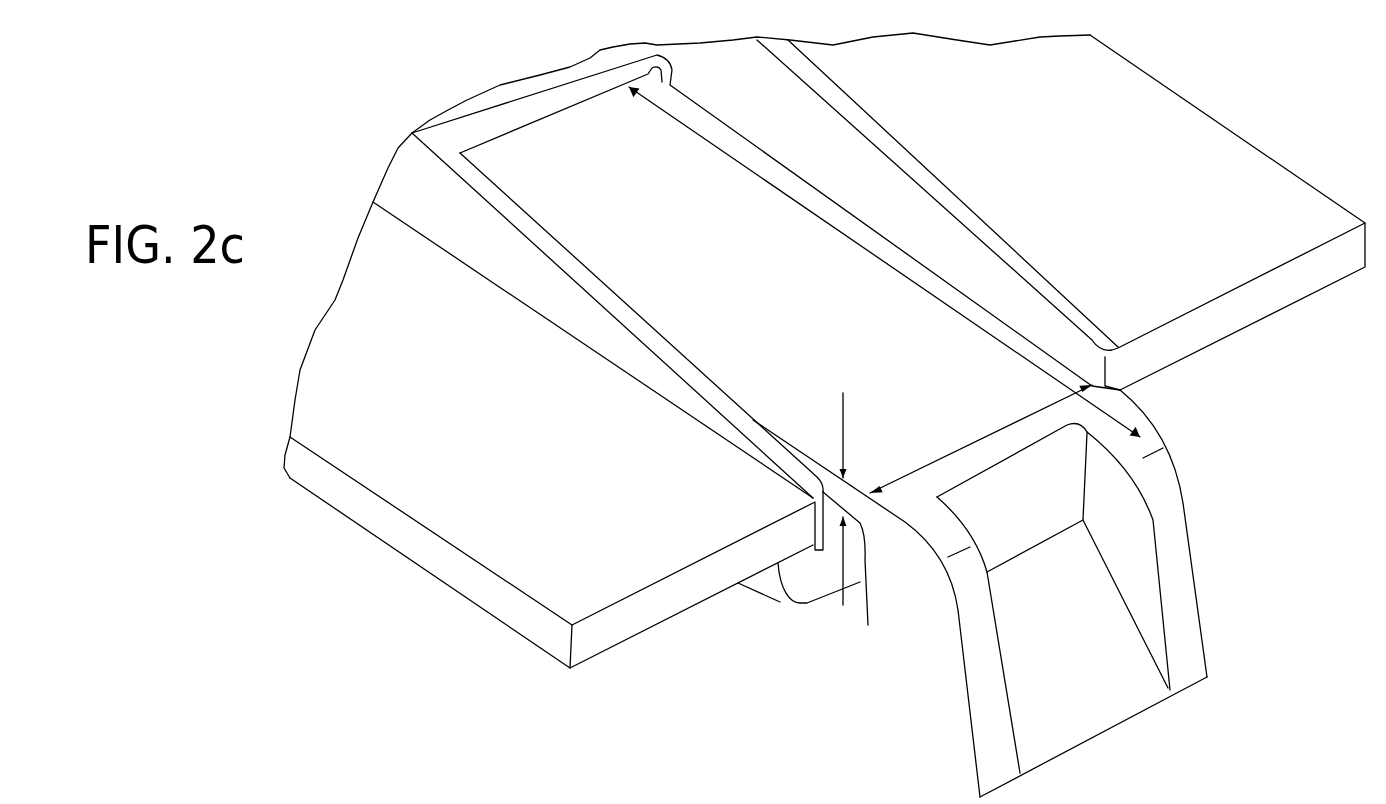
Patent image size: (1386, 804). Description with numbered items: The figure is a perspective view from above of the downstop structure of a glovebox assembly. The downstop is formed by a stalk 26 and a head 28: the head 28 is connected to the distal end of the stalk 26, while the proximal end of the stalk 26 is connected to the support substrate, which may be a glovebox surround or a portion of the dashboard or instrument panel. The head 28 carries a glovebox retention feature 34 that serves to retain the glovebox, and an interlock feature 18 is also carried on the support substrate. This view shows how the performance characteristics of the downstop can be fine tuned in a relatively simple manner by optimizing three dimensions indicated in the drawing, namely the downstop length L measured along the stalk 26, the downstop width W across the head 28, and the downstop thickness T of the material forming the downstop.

The interlock feature 18 is at (803, 583).
The stalk 26 is at (805, 309).
The head 28 is at (1080, 693).
The glovebox retention feature 34 is at (985, 688).
The downstop length L is at (767, 186).
The downstop width W is at (990, 433).
The downstop thickness T is at (843, 418).